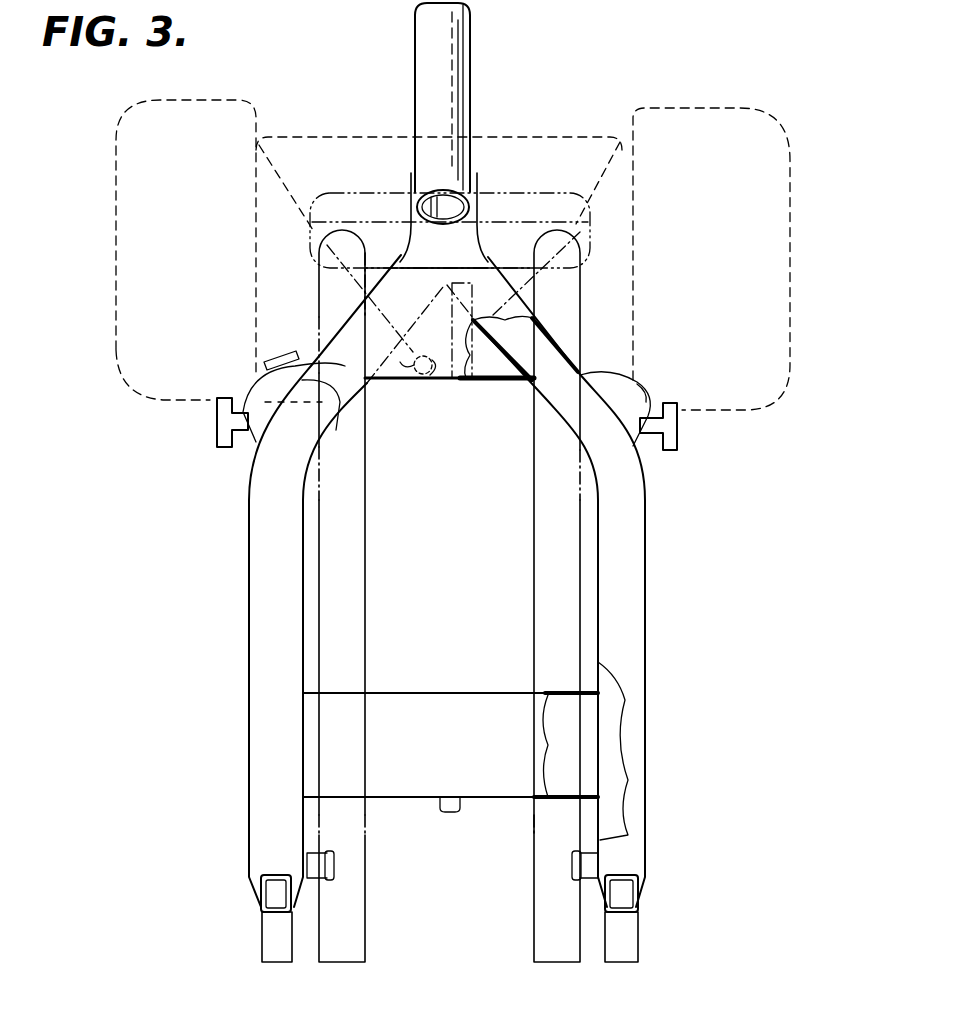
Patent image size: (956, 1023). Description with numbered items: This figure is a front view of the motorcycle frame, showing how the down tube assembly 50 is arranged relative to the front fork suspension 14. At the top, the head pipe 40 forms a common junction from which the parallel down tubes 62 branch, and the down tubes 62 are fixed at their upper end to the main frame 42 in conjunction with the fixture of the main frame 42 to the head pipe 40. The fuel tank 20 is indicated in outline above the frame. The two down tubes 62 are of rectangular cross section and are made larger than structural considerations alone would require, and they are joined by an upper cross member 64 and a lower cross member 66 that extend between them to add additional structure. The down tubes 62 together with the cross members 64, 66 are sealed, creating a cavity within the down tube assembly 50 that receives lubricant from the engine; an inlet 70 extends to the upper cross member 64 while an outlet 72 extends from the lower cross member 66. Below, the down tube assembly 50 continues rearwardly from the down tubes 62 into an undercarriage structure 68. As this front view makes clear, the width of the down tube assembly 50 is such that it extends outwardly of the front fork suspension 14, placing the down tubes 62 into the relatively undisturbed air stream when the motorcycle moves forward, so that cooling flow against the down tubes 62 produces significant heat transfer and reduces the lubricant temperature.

The front fork suspension 14 is at (372, 598).
The fuel tank 20 is at (236, 100).
The head pipe 40 is at (472, 76).
The main frame 42 is at (307, 137).
The down tube assembly 50 is at (437, 608).
The down tubes 62 is at (248, 572).
The upper cross member 64 is at (475, 383).
The lower cross member 66 is at (405, 798).
The undercarriage structure 68 is at (267, 936).
The inlet 70 is at (418, 375).
The outlet 72 is at (460, 800).